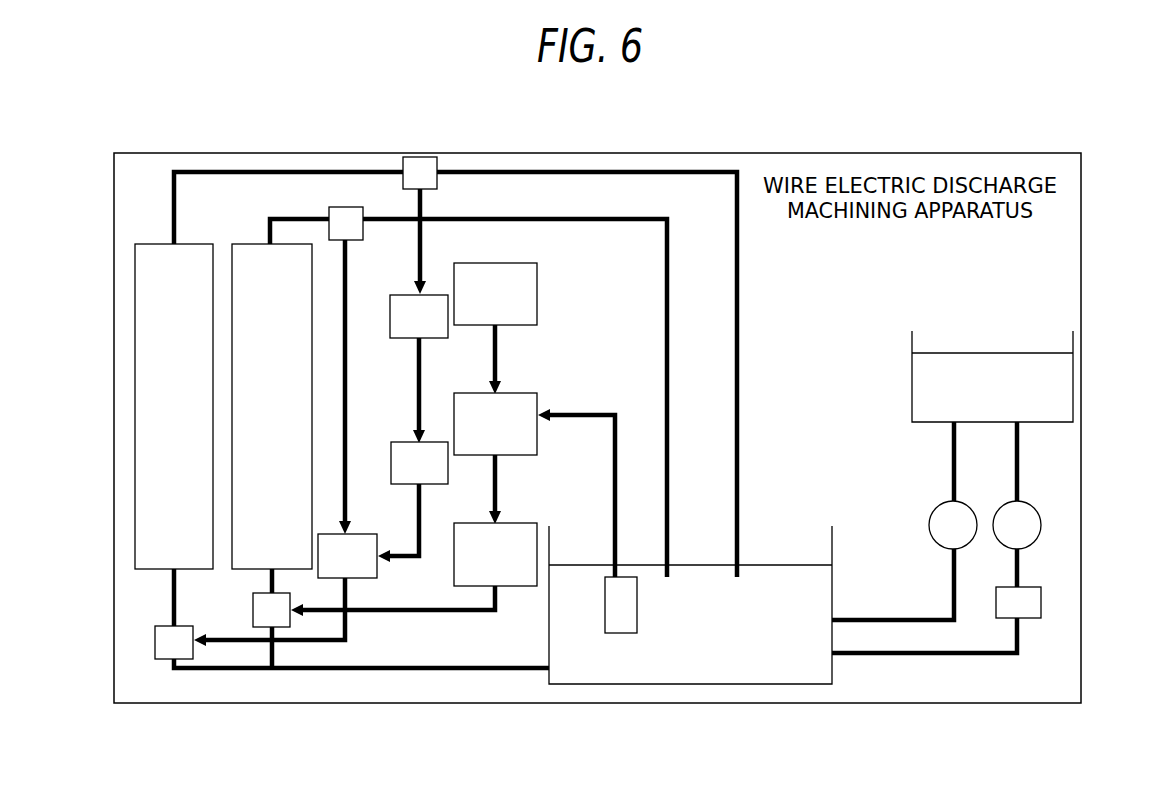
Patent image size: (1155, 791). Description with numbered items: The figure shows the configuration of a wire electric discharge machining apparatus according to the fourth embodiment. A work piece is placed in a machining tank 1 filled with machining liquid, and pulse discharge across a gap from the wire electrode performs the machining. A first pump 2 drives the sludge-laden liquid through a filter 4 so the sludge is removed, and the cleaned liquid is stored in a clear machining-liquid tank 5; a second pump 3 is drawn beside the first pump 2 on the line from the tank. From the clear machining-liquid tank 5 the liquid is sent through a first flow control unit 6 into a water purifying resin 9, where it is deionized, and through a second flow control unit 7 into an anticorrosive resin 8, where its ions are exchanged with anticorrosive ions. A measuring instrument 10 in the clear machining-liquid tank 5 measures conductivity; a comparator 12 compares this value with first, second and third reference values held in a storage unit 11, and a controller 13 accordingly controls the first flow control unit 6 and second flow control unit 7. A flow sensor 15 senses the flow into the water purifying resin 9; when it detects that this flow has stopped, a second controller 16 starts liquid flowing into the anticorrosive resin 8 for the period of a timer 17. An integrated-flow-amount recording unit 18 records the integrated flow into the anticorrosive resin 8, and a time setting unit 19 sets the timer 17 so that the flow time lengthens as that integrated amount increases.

The machining tank 1 is at (992, 358).
The first pump 2 is at (1035, 503).
The pump 3 is at (943, 499).
The filter 4 is at (1061, 588).
The clear machining-liquid tank 5 is at (723, 644).
The first flow control unit 6 is at (238, 673).
The second flow control unit 7 is at (140, 694).
The anticorrosive resin 8 is at (141, 406).
The water purifying resin 9 is at (259, 386).
The measuring instrument 10 is at (650, 672).
The storage unit 11 is at (534, 286).
The comparator 12 is at (529, 405).
The controller 13 is at (511, 534).
The flow sensor 15 is at (310, 179).
The second controller 16 is at (372, 570).
The timer 17 is at (402, 439).
The integrated-flow-amount recording unit 18 is at (448, 148).
The time setting unit 19 is at (402, 300).